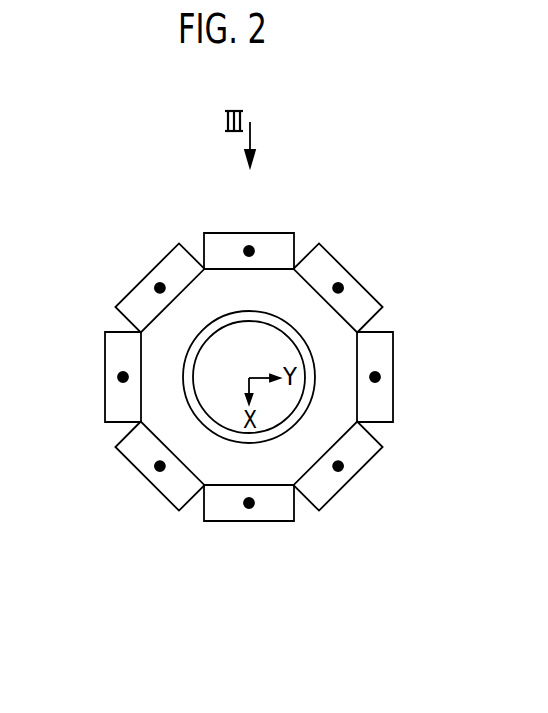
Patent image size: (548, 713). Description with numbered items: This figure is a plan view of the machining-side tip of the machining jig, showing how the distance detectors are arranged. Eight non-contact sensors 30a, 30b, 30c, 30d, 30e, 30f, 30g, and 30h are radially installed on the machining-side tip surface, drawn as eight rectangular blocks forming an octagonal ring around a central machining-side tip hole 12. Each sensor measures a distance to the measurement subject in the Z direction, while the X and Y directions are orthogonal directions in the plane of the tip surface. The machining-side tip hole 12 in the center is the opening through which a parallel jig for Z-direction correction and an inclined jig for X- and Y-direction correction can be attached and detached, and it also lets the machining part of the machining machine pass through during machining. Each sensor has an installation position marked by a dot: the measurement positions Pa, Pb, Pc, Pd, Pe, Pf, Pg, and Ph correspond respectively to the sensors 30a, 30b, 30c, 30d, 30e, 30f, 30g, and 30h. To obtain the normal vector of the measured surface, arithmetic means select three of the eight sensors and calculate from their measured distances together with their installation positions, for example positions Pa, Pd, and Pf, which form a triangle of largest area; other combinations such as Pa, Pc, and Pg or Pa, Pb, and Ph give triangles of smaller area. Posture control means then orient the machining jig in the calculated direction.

The machining-side tip hole 12 is at (283, 410).
The non-contact sensor 30a is at (105, 400).
The non-contact sensor 30b is at (138, 284).
The non-contact sensor 30c is at (221, 232).
The non-contact sensor 30d is at (340, 264).
The non-contact sensor 30e is at (393, 410).
The non-contact sensor 30f is at (340, 490).
The non-contact sensor 30g is at (265, 521).
The non-contact sensor 30h is at (157, 489).
The measurement position Pa is at (121, 377).
The measurement position Pb is at (159, 284).
The measurement position Pc is at (252, 246).
The measurement position Pd is at (340, 288).
The measurement position Pe is at (377, 377).
The measurement position Pf is at (340, 466).
The measurement position Pg is at (248, 506).
The measurement position Ph is at (158, 466).